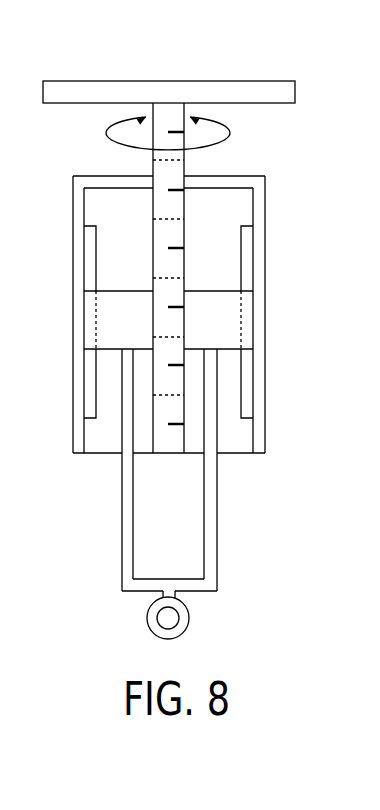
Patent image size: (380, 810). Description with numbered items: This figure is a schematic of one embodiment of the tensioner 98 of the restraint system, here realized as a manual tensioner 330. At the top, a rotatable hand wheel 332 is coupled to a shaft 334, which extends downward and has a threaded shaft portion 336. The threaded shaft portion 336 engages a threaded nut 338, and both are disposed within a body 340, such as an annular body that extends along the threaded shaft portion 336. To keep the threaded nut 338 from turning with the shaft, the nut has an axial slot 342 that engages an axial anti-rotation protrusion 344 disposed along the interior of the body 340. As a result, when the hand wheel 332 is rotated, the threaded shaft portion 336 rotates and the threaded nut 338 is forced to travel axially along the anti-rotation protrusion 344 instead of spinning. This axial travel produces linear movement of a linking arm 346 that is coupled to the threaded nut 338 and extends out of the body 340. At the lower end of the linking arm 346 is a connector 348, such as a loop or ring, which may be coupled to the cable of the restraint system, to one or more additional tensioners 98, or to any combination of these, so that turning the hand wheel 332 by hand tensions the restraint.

The tensioner 98 is at (216, 43).
The manual tensioner 330 is at (329, 117).
The rotatable hand wheel 332 is at (107, 81).
The shaft 334 is at (177, 168).
The threaded shaft portion 336 is at (155, 256).
The threaded nut 338 is at (213, 307).
The body 340 is at (257, 217).
The axial slot 342 is at (275, 322).
The axial anti-rotation protrusion 344 is at (247, 373).
The linking arm 346 is at (210, 502).
The connector 348 is at (183, 628).